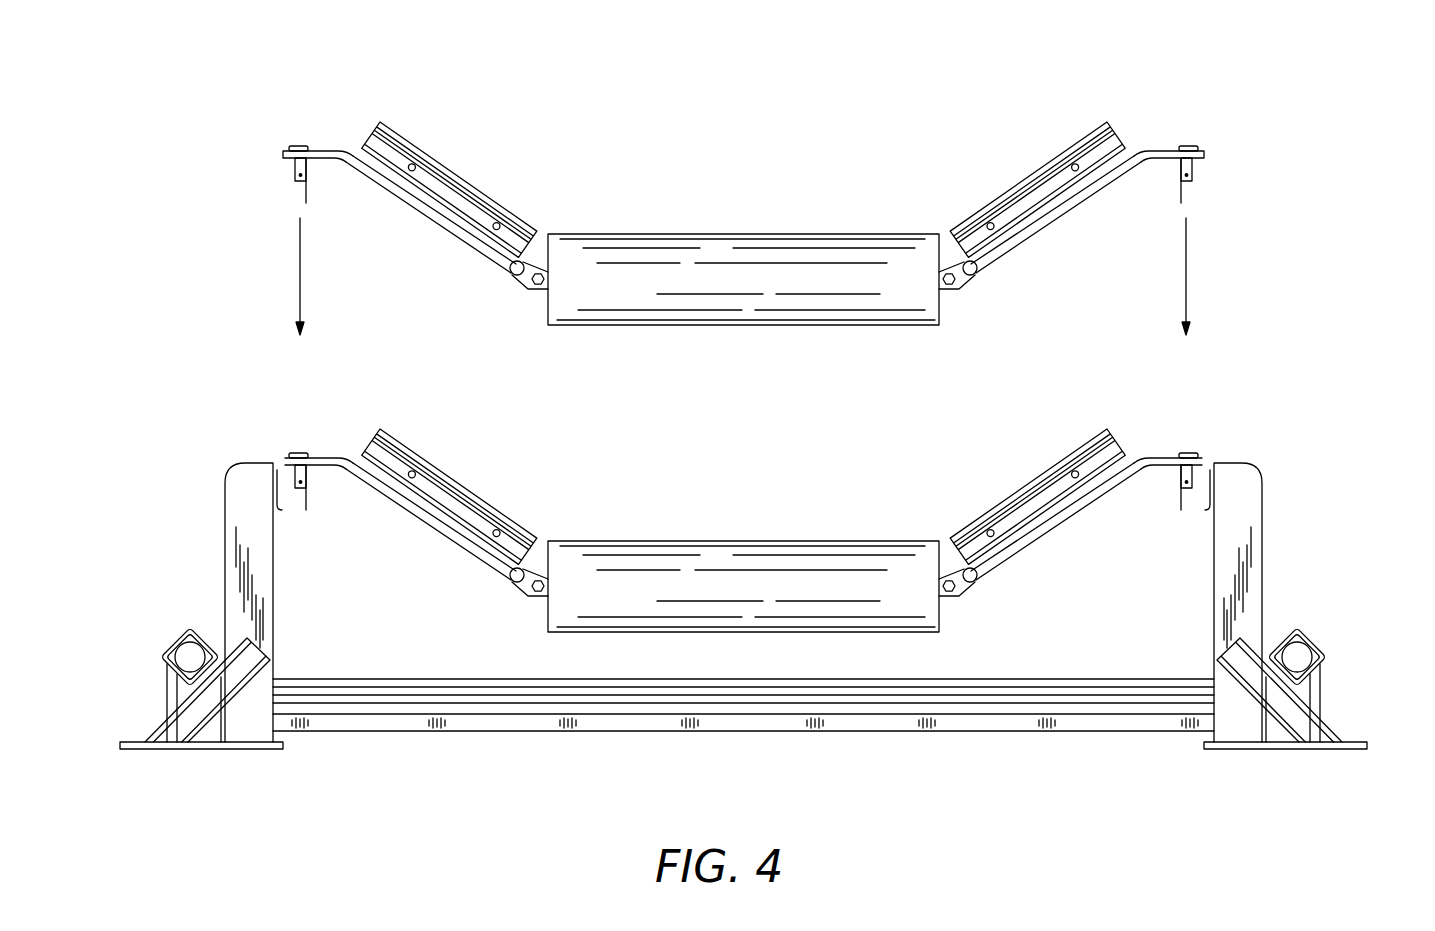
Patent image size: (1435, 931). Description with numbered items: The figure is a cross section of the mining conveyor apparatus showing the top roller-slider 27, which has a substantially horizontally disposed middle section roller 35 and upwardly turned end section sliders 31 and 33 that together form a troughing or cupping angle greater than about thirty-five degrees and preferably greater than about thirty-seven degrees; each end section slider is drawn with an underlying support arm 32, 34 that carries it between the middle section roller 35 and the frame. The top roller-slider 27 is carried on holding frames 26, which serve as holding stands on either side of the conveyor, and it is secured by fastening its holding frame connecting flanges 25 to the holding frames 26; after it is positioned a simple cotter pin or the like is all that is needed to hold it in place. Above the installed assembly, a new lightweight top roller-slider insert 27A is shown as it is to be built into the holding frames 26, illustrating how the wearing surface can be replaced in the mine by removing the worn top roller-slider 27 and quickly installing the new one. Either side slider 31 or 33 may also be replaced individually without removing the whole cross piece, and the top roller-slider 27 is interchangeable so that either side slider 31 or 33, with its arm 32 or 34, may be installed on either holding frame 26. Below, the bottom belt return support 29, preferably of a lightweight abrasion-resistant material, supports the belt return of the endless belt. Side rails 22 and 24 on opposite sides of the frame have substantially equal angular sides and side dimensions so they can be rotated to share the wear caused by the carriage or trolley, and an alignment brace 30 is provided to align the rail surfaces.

The top roller-slider insert 27A is at (722, 234).
The top roller-slider 27 is at (738, 453).
The holding frame connecting flanges 25 is at (338, 458).
The holding frame 26 is at (224, 532).
The end section slider 31 is at (472, 488).
The left wing arm 32 is at (413, 515).
The end section slider 33 is at (1008, 492).
The right wing arm 34 is at (1038, 542).
The middle section roller 35 is at (700, 633).
The bottom belt return support 29 is at (452, 678).
The side rail 22 is at (165, 687).
The side rail 24 is at (1323, 682).
The alignment brace 30 is at (237, 700).